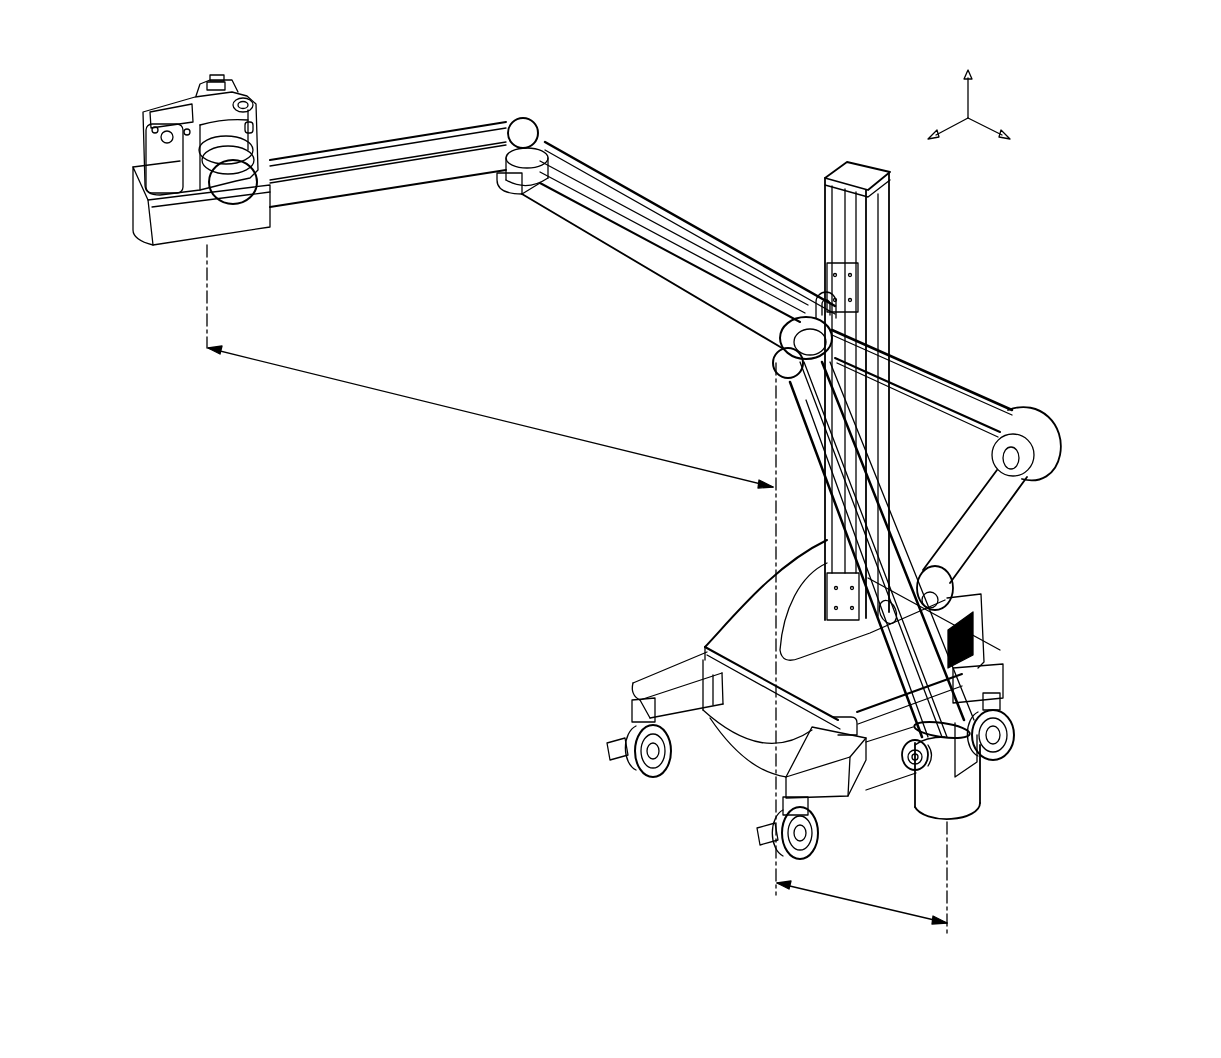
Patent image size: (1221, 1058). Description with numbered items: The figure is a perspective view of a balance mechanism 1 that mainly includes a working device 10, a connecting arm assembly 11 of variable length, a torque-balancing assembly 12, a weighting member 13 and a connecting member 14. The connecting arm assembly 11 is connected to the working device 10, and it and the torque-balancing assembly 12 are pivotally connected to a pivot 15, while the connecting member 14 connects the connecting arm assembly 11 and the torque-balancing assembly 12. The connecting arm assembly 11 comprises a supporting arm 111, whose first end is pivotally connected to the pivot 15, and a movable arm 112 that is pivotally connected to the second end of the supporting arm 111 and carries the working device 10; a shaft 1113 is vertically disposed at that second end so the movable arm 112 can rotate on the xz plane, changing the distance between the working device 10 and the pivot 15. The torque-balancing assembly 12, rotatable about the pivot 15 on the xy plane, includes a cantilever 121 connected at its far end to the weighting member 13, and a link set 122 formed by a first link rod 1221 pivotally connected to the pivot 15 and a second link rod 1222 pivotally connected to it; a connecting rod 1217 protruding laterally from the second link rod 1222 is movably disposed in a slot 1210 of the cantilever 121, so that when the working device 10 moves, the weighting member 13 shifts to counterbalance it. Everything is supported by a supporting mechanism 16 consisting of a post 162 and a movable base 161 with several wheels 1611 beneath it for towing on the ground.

The balance mechanism 1 is at (1135, 160).
The working device 10 is at (271, 109).
The connecting arm assembly 11 is at (652, 197).
The supporting arm 111 is at (637, 253).
The movable arm 112 is at (373, 185).
The shaft 1113 is at (520, 118).
The torque-balancing assembly 12 is at (970, 396).
The cantilever 121 is at (890, 540).
The link set 122 is at (1098, 500).
The first link rod 1221 is at (963, 433).
The second link rod 1222 is at (978, 525).
The connecting rod 1217 is at (897, 611).
The slot 1210 is at (975, 632).
The weighting member 13 is at (965, 803).
The connecting member 14 is at (733, 243).
The pivot 15 is at (768, 374).
The supporting mechanism 16 is at (898, 268).
The movable base 161 is at (733, 633).
The wheels 1611 is at (612, 735).
The post 162 is at (822, 524).